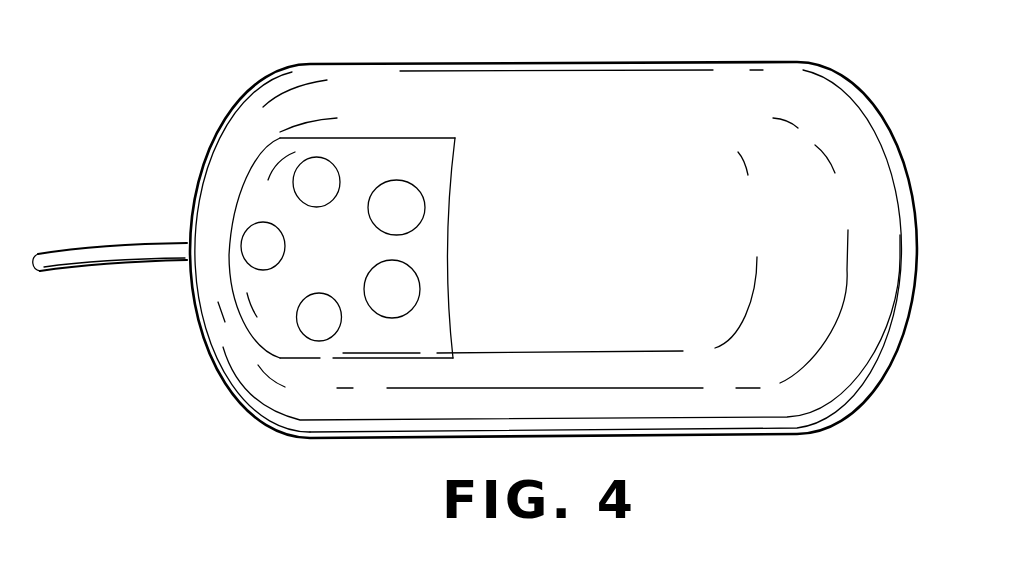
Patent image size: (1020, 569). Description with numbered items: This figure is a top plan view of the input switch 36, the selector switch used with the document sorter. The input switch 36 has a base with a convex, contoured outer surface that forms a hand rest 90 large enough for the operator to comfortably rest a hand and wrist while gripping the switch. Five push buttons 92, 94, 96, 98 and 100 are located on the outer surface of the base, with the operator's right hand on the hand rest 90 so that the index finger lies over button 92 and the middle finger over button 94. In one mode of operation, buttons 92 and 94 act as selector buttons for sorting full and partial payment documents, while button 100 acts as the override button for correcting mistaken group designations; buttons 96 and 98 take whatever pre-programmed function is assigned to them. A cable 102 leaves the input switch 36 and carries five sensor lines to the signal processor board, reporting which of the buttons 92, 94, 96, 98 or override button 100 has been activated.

The input switch 36 is at (638, 62).
The hand rest 90 is at (562, 110).
The button 92 is at (323, 330).
The button 94 is at (257, 248).
The button 96 is at (320, 168).
The button 98 is at (410, 203).
The override button 100 is at (405, 283).
The cable 102 is at (148, 250).